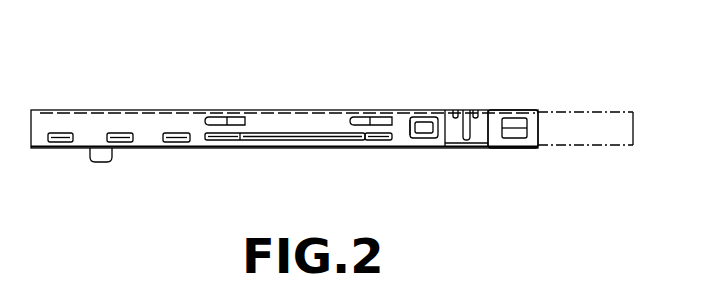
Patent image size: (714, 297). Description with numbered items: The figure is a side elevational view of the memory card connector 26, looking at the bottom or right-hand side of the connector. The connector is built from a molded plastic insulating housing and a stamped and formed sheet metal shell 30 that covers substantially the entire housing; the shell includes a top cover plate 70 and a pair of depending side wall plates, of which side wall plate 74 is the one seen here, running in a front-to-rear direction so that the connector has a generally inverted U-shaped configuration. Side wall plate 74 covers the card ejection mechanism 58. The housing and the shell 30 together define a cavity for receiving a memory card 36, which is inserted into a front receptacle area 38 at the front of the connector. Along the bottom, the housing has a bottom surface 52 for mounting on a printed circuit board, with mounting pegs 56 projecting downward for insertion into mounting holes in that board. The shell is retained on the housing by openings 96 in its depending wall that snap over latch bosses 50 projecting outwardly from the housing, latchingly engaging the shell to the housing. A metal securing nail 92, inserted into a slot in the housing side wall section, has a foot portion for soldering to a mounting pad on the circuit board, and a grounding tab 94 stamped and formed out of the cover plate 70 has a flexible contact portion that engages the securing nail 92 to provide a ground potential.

The memory card connector 26 is at (128, 78).
The metal shell 30 is at (320, 88).
The memory card 36 is at (612, 88).
The front receptacle area 38 is at (540, 125).
The latch bosses 50 is at (426, 140).
The bottom surface 52 is at (245, 150).
The mounting pegs 56 is at (102, 152).
The card ejection mechanism 58 is at (312, 148).
The top cover plate 70 is at (230, 117).
The side wall plate 74 is at (402, 140).
The metal securing nail 92 is at (471, 165).
The grounding tab 94 is at (475, 128).
The openings 96 is at (410, 127).